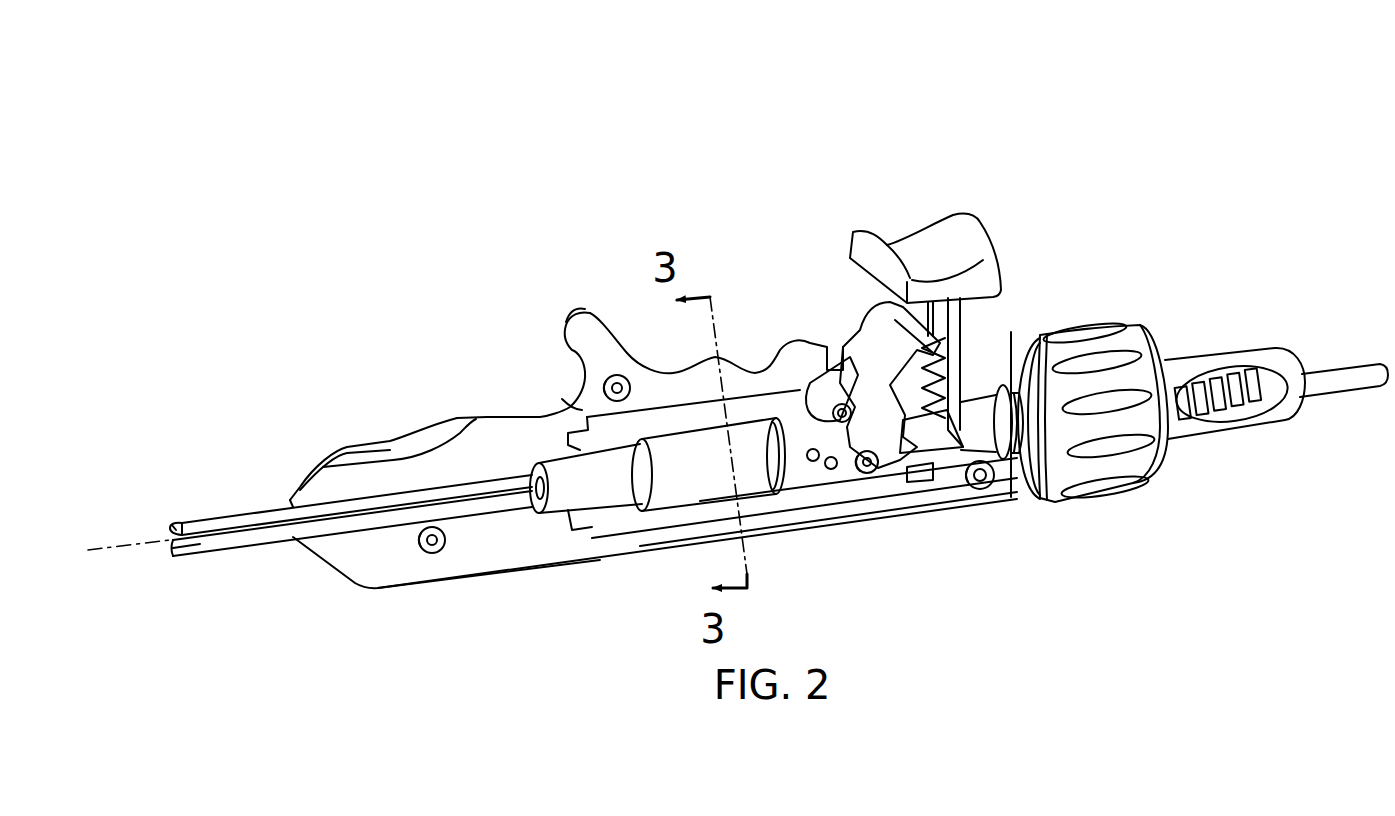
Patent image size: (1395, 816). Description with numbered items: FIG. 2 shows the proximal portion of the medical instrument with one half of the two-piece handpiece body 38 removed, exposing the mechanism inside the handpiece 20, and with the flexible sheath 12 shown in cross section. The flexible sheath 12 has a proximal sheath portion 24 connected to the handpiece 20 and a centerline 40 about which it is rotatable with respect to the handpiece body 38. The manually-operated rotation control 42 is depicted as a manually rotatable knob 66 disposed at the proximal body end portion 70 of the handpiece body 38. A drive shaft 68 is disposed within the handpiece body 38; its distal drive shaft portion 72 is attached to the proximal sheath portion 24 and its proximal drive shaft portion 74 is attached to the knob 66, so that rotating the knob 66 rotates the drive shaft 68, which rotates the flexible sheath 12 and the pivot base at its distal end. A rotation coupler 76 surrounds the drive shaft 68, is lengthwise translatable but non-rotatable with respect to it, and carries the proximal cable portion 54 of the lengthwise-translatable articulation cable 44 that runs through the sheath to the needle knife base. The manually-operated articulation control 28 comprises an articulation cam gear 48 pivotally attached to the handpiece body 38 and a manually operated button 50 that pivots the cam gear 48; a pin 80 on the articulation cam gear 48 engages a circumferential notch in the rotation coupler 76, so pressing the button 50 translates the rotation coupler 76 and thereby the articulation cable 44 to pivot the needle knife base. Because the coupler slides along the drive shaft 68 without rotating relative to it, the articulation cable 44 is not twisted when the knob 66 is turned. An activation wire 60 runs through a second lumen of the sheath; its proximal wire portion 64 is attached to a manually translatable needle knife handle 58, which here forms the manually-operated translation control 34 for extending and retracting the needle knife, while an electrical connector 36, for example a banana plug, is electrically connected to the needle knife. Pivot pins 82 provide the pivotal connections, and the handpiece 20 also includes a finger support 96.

The flexible sheath 12 is at (334, 529).
The handpiece 20 is at (560, 570).
The proximal sheath portion 24 is at (262, 507).
The manually-operated articulation control 28 is at (919, 220).
The manually-operated translation control 34 is at (1235, 340).
The electrical connector 36 is at (1343, 366).
The handpiece body 38 is at (482, 574).
The centerline 40 is at (103, 552).
The manually-operated rotation control 42 is at (1115, 460).
The lengthwise-translatable articulation cable 44 is at (210, 554).
The articulation cam gear 48 is at (862, 323).
The manually operated button 50 is at (960, 234).
The proximal cable portion 54 is at (260, 540).
The manually translatable needle knife handle 58 is at (1182, 356).
The activation wire 60 is at (200, 520).
The proximal wire portion 64 is at (175, 523).
The manually rotatable knob 66 is at (1158, 486).
The drive shaft 68 is at (623, 507).
The proximal body end portion 70 is at (1025, 500).
The distal drive shaft portion 72 is at (540, 448).
The proximal drive shaft portion 74 is at (998, 396).
The rotation coupler 76 is at (753, 474).
The pin 80 is at (869, 472).
The pivot pins 82 is at (845, 422).
The finger support 96 is at (568, 353).